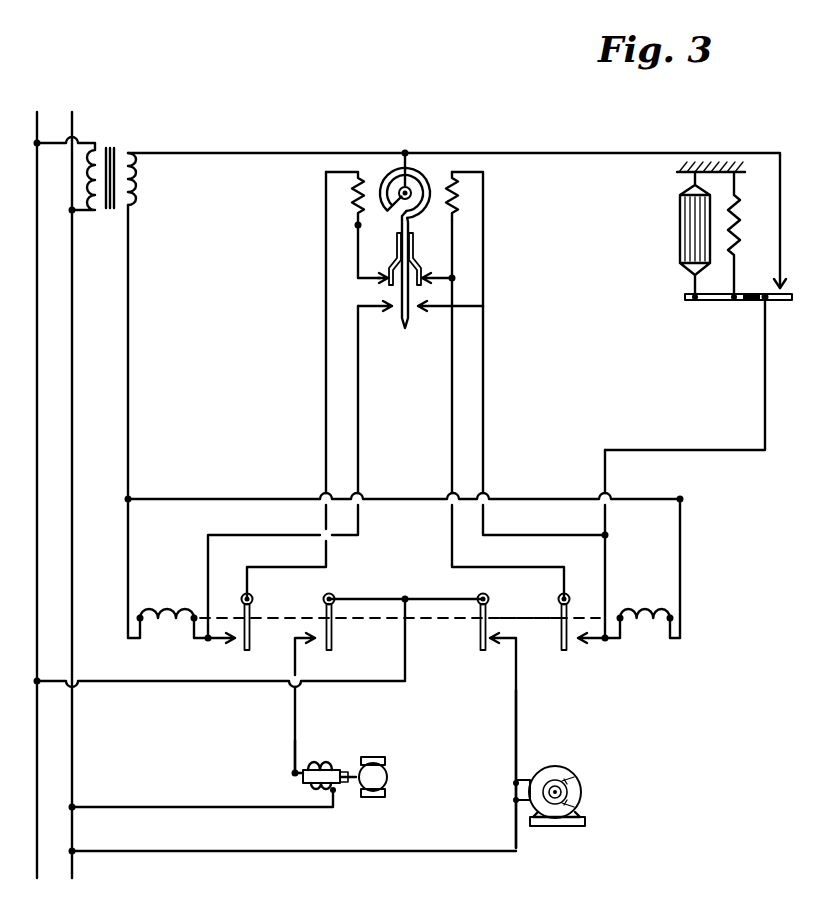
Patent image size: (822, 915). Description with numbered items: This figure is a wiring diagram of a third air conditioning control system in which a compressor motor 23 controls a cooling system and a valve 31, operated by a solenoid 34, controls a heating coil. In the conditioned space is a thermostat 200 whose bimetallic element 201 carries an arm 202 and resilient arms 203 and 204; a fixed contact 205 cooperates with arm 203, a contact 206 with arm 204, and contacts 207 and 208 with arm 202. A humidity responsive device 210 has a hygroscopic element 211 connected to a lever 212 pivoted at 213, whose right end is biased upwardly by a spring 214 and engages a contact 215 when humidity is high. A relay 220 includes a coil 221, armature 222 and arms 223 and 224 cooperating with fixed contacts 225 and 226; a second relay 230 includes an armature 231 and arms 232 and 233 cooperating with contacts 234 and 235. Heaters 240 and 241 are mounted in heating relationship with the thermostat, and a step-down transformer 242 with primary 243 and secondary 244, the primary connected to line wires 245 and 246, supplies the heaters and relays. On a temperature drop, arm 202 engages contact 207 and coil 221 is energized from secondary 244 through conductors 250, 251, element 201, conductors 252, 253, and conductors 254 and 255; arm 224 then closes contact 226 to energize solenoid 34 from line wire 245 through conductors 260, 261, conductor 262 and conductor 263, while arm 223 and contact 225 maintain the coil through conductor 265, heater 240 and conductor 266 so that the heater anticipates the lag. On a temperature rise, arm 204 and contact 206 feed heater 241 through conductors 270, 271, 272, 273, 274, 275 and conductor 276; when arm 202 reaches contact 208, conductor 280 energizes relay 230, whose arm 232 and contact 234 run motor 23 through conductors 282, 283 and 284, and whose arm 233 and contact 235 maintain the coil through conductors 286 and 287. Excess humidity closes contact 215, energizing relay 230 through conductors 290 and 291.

The compressor motor 23 is at (580, 796).
The valve 31 is at (386, 782).
The solenoid 34 is at (301, 782).
The thermostat 200 is at (415, 241).
The bimetallic element 201 is at (431, 178).
The arm 202 is at (405, 330).
The resilient arm 203 is at (392, 260).
The resilient arm 204 is at (421, 268).
The fixed contact 205 is at (383, 284).
The contact 206 is at (446, 276).
The contact 207 is at (390, 313).
The contact 208 is at (423, 313).
The humidity responsive device 210 is at (697, 248).
The hygroscopic element 211 is at (685, 247).
The lever 212 is at (710, 304).
The pivot 213 is at (719, 290).
The spring 214 is at (750, 236).
The contact 215 is at (774, 283).
The relay 220 is at (369, 622).
The relay coil 221 is at (168, 636).
The armature 222 is at (252, 640).
The arm 223 is at (254, 604).
The arm 224 is at (334, 632).
The fixed contact 225 is at (240, 646).
The fixed contact 226 is at (318, 648).
The relay 230 is at (648, 629).
The armature 231 is at (546, 617).
The arm 232 is at (478, 631).
The arm 233 is at (568, 620).
The contact 234 is at (502, 649).
The contact 235 is at (583, 648).
The heater 240 is at (344, 200).
The heater 241 is at (462, 196).
The step-down transformer 242 is at (114, 137).
The primary 243 is at (101, 222).
The secondary 244 is at (140, 191).
The line wire 245 is at (50, 495).
The line wire 246 is at (88, 495).
The conductor 250 is at (253, 152).
The conductor 251 is at (402, 151).
The conductor 252 is at (358, 434).
The conductor 253 is at (204, 643).
The conductor 254 is at (127, 568).
The conductor 255 is at (158, 360).
The conductor 260 is at (174, 684).
The conductor 261 is at (380, 596).
The conductor 262 is at (300, 737).
The conductor 263 is at (216, 807).
The conductor 265 is at (358, 268).
The conductor 266 is at (326, 402).
The conductor 270 is at (450, 291).
The conductor 271 is at (467, 251).
The conductor 272 is at (488, 266).
The conductor 273 is at (483, 436).
The conductor 274 is at (605, 576).
The conductor 275 is at (622, 655).
The conductor 276 is at (681, 580).
The conductor 280 is at (474, 306).
The conductor 282 is at (455, 596).
The conductor 283 is at (517, 748).
The conductor 284 is at (371, 853).
The conductor 286 is at (453, 456).
The conductor 287 is at (600, 658).
The conductor 290 is at (625, 152).
The conductor 291 is at (754, 456).